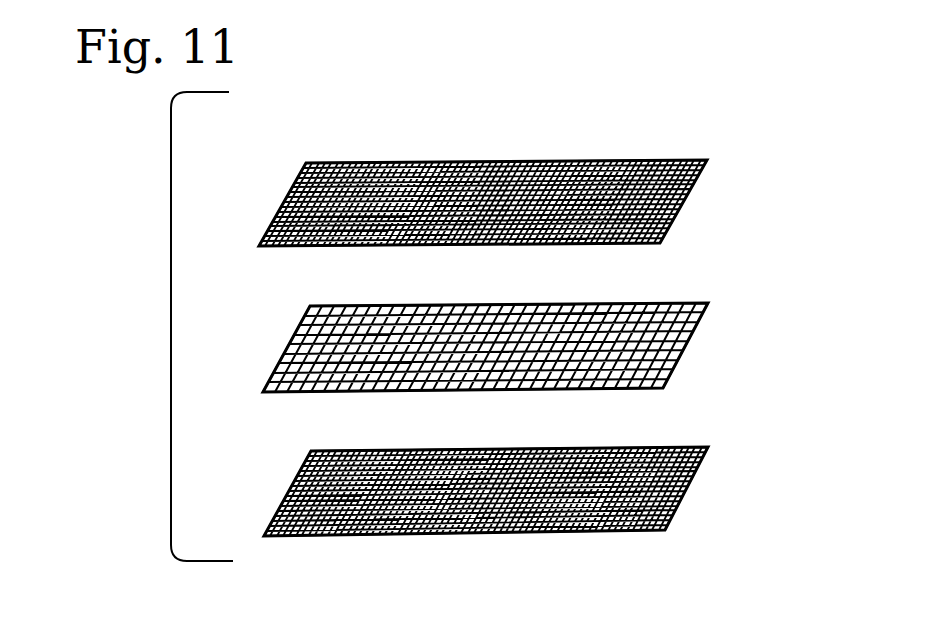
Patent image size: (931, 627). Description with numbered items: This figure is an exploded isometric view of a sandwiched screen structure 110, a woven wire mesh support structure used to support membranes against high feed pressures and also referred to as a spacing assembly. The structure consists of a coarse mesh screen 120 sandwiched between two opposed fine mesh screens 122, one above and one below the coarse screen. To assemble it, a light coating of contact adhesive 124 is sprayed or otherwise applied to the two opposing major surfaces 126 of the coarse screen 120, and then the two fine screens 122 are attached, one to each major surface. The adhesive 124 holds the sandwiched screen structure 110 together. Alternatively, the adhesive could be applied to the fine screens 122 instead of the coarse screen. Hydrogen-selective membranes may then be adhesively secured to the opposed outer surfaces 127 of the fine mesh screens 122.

The screen structure 110 is at (216, 196).
The coarse mesh screen 120 is at (542, 344).
The fine mesh screens 122 is at (522, 341).
The contact adhesive 124 is at (560, 320).
The major surfaces 126 is at (700, 332).
The opposed surfaces 127 is at (562, 172).